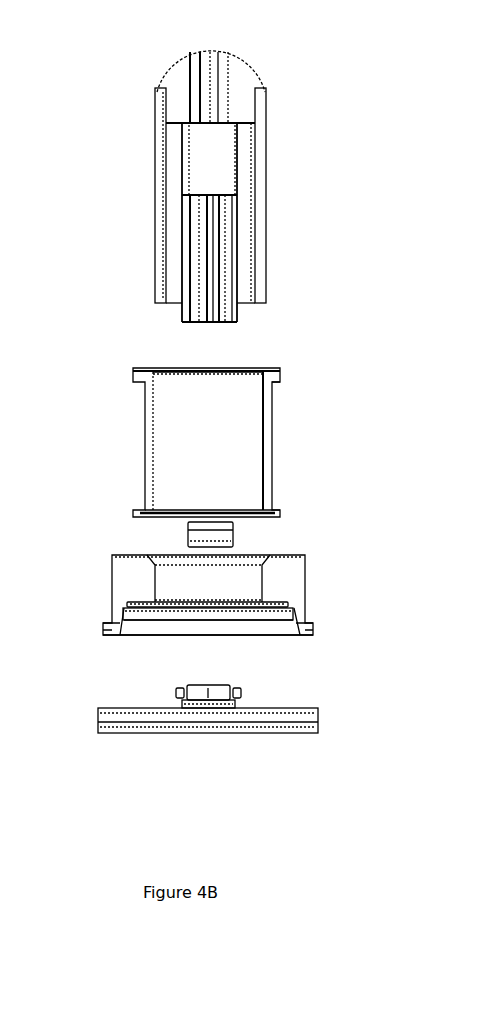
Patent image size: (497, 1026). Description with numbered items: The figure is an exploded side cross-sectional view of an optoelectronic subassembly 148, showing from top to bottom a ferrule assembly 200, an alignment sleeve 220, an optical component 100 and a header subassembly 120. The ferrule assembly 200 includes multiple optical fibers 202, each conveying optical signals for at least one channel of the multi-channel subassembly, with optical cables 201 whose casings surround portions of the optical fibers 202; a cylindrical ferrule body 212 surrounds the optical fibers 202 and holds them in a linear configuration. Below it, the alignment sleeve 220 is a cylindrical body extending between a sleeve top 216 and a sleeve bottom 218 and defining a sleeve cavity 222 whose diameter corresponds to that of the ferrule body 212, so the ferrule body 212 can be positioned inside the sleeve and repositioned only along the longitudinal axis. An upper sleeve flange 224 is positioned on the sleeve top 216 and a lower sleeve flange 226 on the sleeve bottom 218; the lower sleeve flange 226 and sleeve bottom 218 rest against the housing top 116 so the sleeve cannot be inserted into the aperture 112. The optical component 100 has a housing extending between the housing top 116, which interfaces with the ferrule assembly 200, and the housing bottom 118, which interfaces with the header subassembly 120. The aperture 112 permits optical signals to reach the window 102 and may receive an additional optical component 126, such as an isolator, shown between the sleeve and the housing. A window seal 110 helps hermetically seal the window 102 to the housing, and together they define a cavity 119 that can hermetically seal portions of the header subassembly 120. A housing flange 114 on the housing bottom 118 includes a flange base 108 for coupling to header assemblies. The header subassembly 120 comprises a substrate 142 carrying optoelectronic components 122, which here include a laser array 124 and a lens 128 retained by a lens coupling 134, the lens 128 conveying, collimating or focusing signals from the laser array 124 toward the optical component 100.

The optical component 100 is at (80, 590).
The window 102 is at (212, 600).
The flange base 108 is at (297, 622).
The window seal 110 is at (125, 604).
The aperture 112 is at (203, 575).
The housing flange 114 is at (323, 628).
The housing top 116 is at (103, 558).
The housing bottom 118 is at (90, 630).
The cavity 119 is at (213, 637).
The header subassembly 120 is at (88, 715).
The optoelectronic components 122 is at (170, 690).
The laser array 124 is at (197, 698).
The optical component 126 is at (195, 533).
The lens 128 is at (208, 690).
The lens coupling 134 is at (240, 693).
The substrate 142 is at (123, 725).
The optoelectronic subassembly 148 is at (187, 793).
The ferrule assembly 200 is at (128, 133).
The optical cables 201 is at (185, 72).
The optical fibers 202 is at (185, 285).
The ferrule body 212 is at (158, 212).
The sleeve top 216 is at (128, 372).
The sleeve bottom 218 is at (135, 503).
The alignment sleeve 220 is at (147, 463).
The sleeve cavity 222 is at (207, 393).
The upper sleeve flange 224 is at (280, 376).
The lower sleeve flange 226 is at (280, 507).